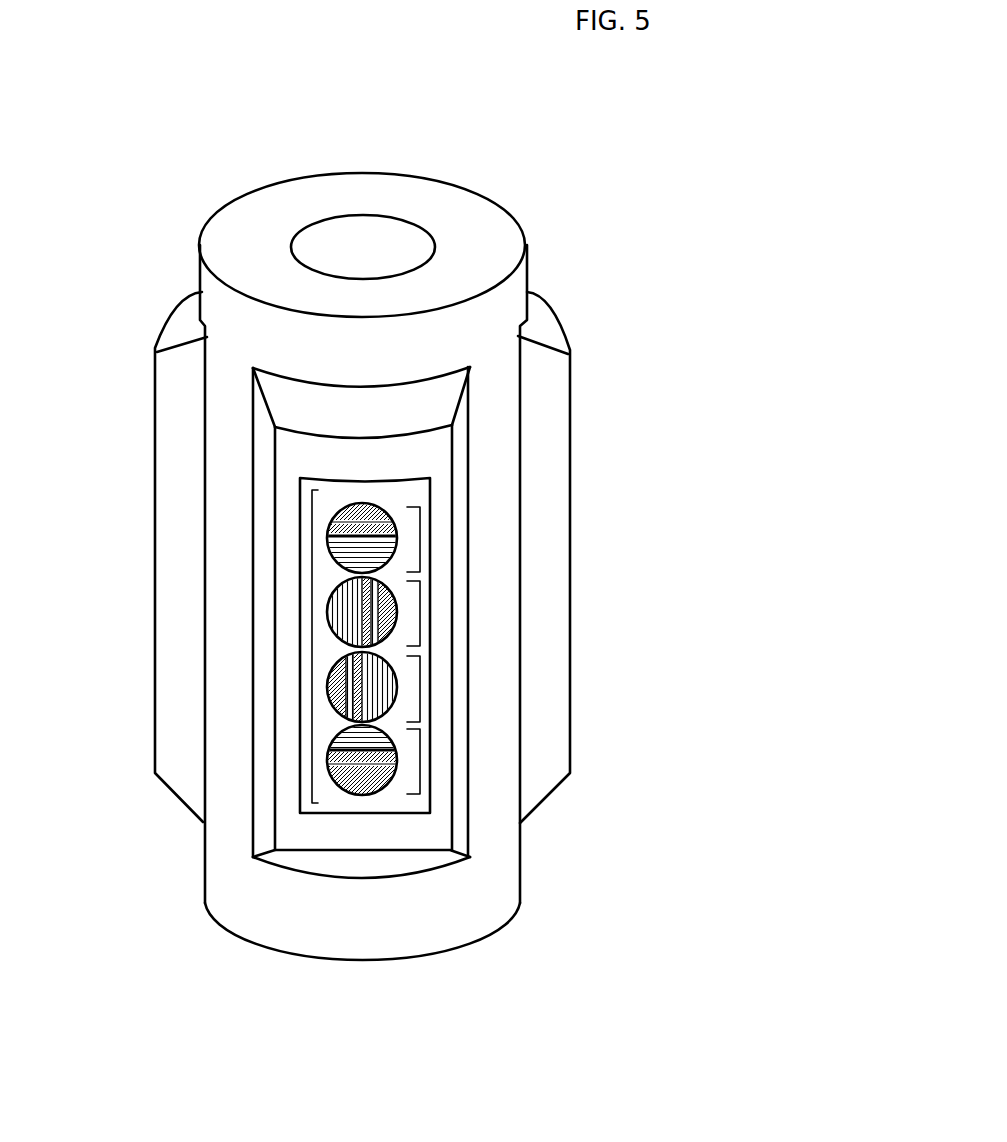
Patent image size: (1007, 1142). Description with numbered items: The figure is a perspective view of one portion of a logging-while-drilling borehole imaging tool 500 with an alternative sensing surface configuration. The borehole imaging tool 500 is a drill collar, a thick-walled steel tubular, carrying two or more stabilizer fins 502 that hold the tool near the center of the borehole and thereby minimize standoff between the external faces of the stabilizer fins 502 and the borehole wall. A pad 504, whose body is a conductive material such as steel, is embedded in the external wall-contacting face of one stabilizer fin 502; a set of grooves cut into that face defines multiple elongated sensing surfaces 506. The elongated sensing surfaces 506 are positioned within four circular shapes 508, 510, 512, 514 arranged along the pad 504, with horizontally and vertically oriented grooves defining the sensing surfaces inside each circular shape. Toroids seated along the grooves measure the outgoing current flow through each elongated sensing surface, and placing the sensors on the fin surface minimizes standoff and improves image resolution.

The borehole imaging tool 500 is at (157, 222).
The stabilizer fins 502 is at (177, 330).
The pad 504 is at (297, 490).
The elongated sensing surfaces 506 is at (312, 648).
The circular shape 508 is at (420, 540).
The circular shape 510 is at (420, 613).
The circular shape 512 is at (420, 690).
The circular shape 514 is at (420, 761).